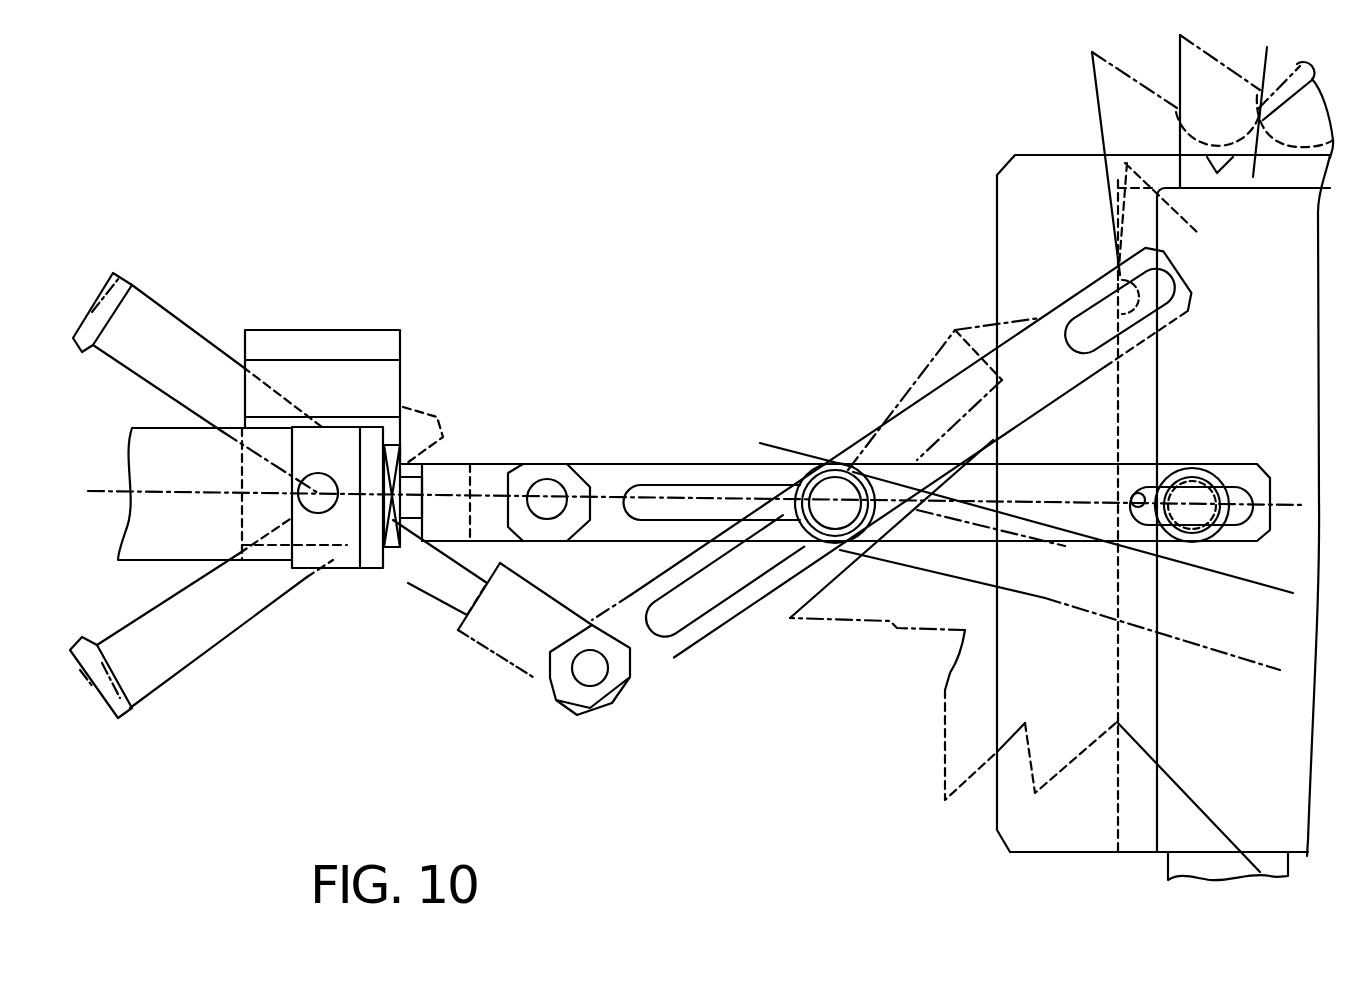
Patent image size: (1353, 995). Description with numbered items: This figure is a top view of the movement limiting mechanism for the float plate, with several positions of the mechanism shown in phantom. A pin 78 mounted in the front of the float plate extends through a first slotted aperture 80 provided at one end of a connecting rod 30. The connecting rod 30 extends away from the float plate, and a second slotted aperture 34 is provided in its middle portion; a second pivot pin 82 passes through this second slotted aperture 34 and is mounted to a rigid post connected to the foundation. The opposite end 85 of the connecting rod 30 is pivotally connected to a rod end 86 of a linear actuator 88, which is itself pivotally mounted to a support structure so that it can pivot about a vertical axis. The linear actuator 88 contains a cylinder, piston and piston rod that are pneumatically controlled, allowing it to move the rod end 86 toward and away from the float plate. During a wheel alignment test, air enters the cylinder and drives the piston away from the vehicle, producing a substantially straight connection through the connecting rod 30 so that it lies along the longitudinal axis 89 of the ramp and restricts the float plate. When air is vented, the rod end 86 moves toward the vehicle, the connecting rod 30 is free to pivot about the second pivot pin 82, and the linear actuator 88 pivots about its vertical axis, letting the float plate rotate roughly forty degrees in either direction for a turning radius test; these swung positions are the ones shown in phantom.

The connecting rod 30 is at (640, 462).
The second slotted aperture 34 is at (658, 489).
The pin 78 is at (1193, 532).
The first slotted aperture 80 is at (1086, 306).
The second pivot pin 82 is at (835, 464).
The opposite end 85 is at (548, 674).
The rod end 86 is at (582, 477).
The linear actuator 88 is at (403, 376).
The longitudinal axis 89 is at (483, 496).